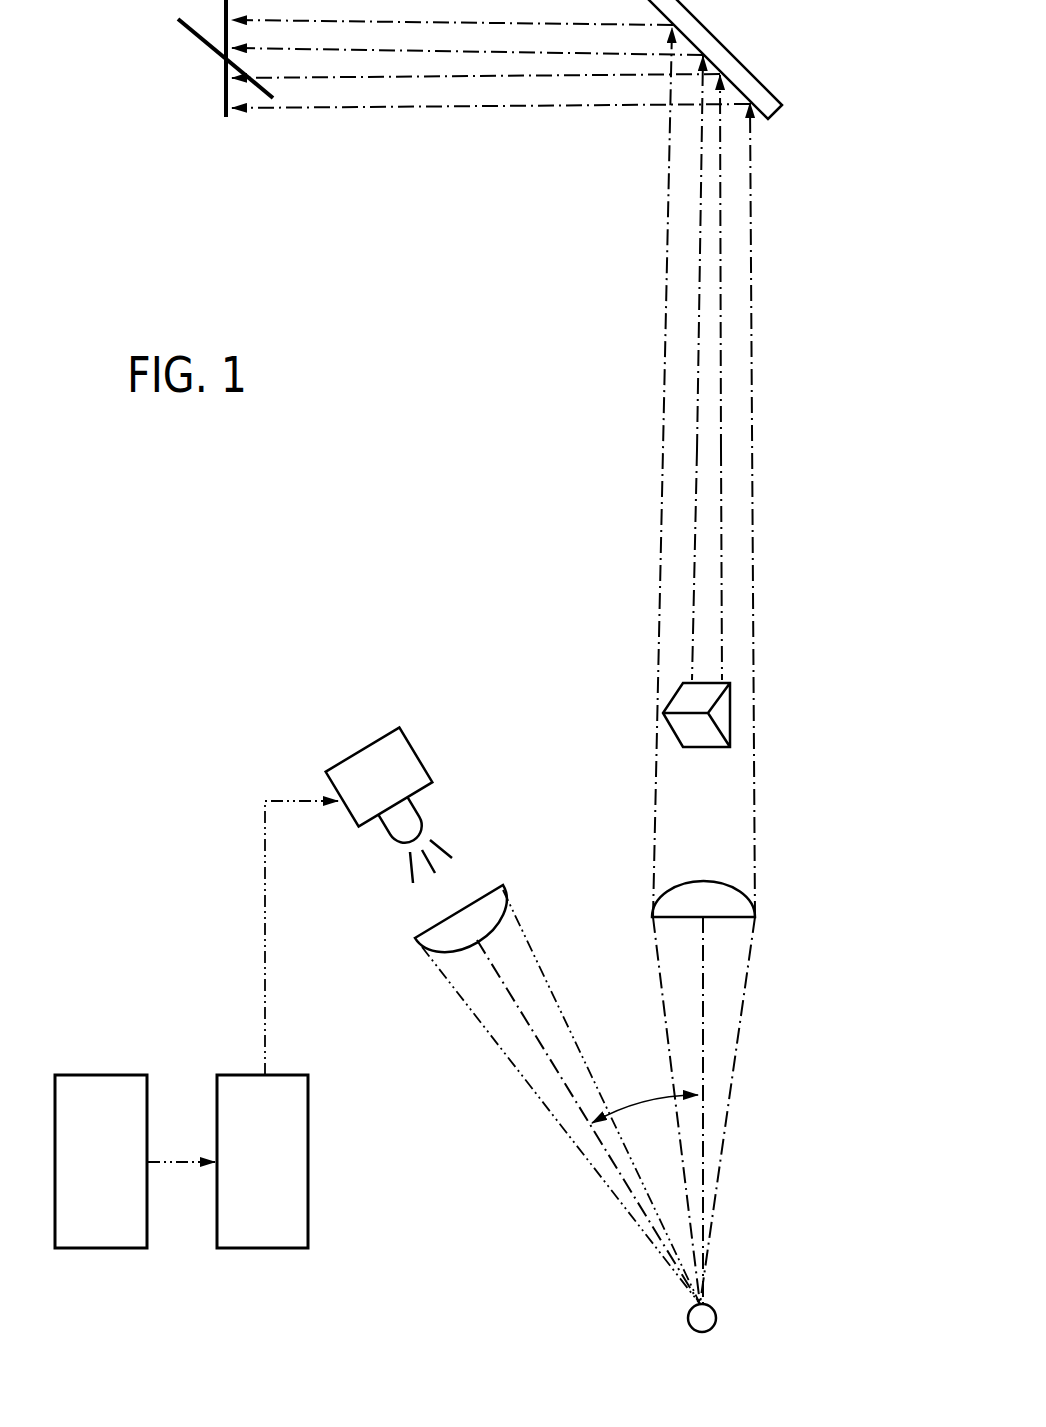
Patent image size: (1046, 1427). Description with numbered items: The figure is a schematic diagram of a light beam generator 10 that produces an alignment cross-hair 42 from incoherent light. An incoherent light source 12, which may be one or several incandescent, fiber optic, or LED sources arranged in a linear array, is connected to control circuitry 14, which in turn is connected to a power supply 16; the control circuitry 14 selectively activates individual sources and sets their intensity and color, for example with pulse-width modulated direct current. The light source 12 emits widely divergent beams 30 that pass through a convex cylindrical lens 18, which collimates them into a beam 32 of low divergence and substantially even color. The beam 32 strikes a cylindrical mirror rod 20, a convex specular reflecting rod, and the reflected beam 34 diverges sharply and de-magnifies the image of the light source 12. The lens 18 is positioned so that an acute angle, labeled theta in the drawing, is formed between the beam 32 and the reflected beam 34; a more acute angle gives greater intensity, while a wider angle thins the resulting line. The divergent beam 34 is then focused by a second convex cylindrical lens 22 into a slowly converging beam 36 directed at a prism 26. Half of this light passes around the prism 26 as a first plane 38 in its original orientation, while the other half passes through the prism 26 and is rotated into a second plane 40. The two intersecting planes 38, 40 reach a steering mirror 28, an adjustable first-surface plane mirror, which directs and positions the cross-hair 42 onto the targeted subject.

The light beam generator 10 is at (498, 253).
The incoherent light source 12 is at (362, 752).
The control circuitry 14 is at (273, 1250).
The power supply 16 is at (100, 1250).
The convex cylindrical lens 18 is at (418, 940).
The cylindrical mirror rod 20 is at (688, 1322).
The convex cylindrical lens 22 is at (727, 903).
The prism 26 is at (727, 710).
The steering mirror 28 is at (725, 43).
The divergent beams 30 is at (397, 863).
The beam 32 is at (550, 1080).
The reflected beam 34 is at (705, 1026).
The slowly converging beam 36 is at (662, 587).
The first plane of light 38 is at (757, 336).
The second plane of light 40 is at (708, 286).
The alignment cross-hair 42 is at (228, 58).